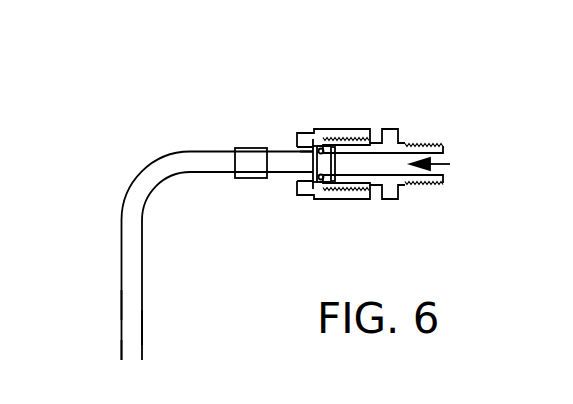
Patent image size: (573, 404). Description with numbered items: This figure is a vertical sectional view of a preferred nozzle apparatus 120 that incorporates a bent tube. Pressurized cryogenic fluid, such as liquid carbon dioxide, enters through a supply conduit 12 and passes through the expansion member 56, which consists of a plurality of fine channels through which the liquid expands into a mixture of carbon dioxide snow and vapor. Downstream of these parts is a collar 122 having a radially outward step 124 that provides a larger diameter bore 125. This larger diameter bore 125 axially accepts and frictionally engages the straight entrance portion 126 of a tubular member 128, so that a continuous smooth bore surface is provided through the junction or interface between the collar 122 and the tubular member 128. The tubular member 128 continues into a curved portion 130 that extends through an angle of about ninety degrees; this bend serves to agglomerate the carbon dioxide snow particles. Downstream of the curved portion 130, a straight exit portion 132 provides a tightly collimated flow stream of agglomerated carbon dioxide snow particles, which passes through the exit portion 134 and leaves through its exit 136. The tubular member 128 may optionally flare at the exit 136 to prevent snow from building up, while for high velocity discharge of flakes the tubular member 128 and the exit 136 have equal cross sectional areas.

The nozzle apparatus 120 is at (238, 81).
The tubular member 128 is at (121, 224).
The curved portion 130 is at (143, 170).
The straight entrance portion 126 is at (203, 152).
The larger diameter bore 125 is at (220, 160).
The straight exit portion 132 is at (121, 305).
The exit 136 is at (121, 355).
The exit portion 134 is at (142, 327).
The radially outward step 124 is at (255, 148).
The collar 122 is at (335, 130).
The expansion member 56 is at (312, 166).
The supply conduit 12 is at (407, 146).